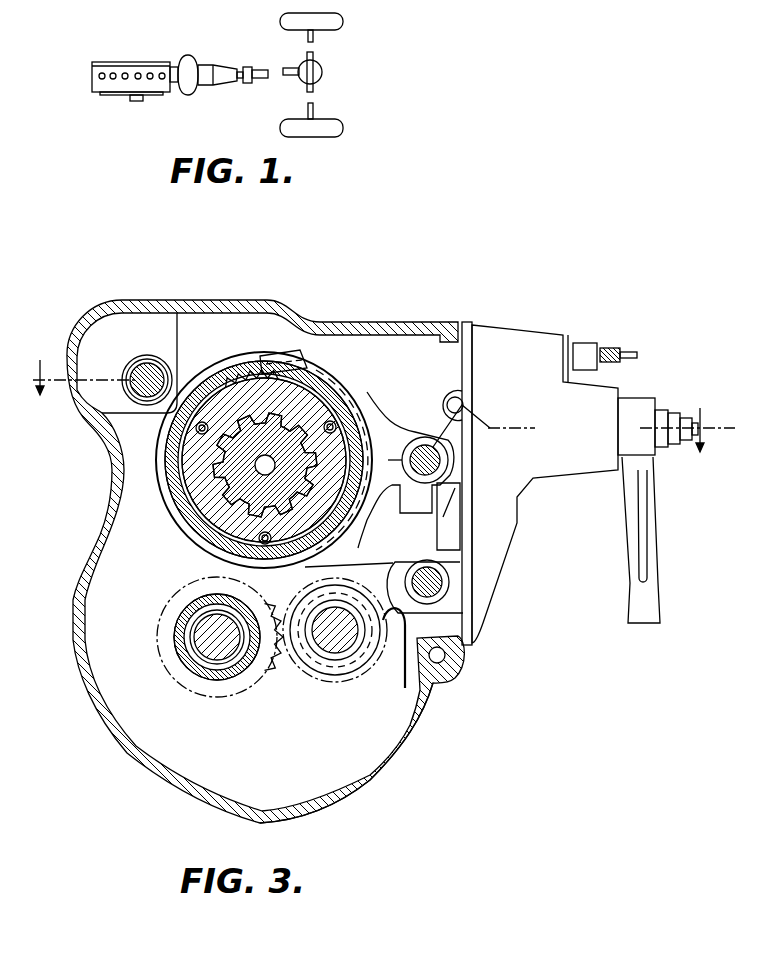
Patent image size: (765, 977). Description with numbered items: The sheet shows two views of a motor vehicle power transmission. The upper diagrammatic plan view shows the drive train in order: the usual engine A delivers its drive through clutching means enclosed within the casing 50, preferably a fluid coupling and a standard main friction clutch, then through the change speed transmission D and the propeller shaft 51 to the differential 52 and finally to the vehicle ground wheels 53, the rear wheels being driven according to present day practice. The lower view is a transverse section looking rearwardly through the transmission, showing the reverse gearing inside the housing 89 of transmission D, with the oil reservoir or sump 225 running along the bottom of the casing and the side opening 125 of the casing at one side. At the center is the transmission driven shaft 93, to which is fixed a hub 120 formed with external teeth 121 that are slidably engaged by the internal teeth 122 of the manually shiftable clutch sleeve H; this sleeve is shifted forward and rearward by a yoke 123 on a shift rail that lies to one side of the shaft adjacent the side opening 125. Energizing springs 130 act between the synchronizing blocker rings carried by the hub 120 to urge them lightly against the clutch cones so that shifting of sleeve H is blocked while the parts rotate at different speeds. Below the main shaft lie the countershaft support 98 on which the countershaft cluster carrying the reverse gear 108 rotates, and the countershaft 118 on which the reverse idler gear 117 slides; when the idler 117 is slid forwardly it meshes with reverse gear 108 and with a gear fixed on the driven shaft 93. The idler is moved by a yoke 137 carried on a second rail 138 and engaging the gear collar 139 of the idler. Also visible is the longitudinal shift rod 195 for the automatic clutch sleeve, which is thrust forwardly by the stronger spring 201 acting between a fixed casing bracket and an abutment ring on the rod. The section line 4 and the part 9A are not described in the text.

In FIG. 1, the engine A is at (130, 62).
In FIG. 1, the casing 50 is at (185, 57).
In FIG. 1, the change speed transmission D is at (218, 63).
In FIG. 3, the change speed transmission D is at (360, 322).
In FIG. 1, the collar 9A is at (247, 65).
In FIG. 1, the propeller shaft 51 is at (258, 80).
In FIG. 1, the differential 52 is at (322, 72).
In FIG. 1, the vehicle ground wheels 53 is at (343, 128).
In FIG. 3, the housing 89 is at (100, 497).
In FIG. 3, the oil reservoir 225 is at (363, 762).
In FIG. 3, the side opening 125 is at (443, 349).
In FIG. 3, the section line 4- 4 is at (365, 419).
In FIG. 3, the external teeth 121 is at (248, 372).
In FIG. 3, the internal teeth 122 is at (224, 378).
In FIG. 3, the yoke 123 is at (340, 382).
In FIG. 3, the spring 201 is at (232, 392).
In FIG. 3, the clutch sleeve H is at (236, 372).
In FIG. 3, the hub 120 is at (207, 493).
In FIG. 3, the driven shaft 93 is at (253, 482).
In FIG. 3, the energizing springs 130 is at (196, 429).
In FIG. 3, the shift rod 195 is at (152, 343).
In FIG. 3, the second rail 138 is at (443, 583).
In FIG. 3, the reverse gear 108 is at (178, 620).
In FIG. 3, the countershaft support 98 is at (212, 655).
In FIG. 3, the reverse idler gear 117 is at (270, 668).
In FIG. 3, the gear collar 139 is at (320, 667).
In FIG. 3, the countershaft 118 is at (343, 650).
In FIG. 3, the yoke 137 is at (392, 659).